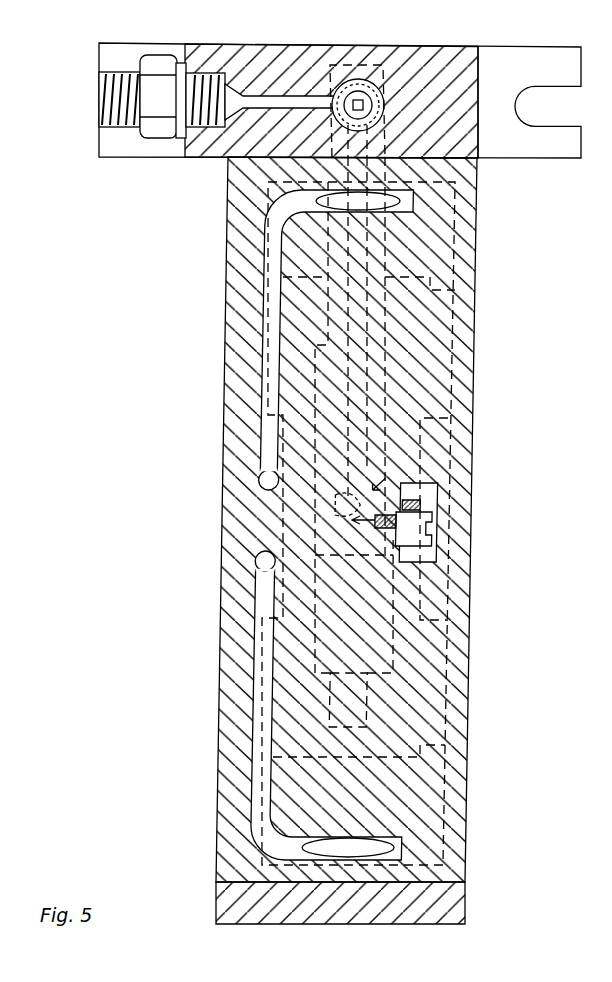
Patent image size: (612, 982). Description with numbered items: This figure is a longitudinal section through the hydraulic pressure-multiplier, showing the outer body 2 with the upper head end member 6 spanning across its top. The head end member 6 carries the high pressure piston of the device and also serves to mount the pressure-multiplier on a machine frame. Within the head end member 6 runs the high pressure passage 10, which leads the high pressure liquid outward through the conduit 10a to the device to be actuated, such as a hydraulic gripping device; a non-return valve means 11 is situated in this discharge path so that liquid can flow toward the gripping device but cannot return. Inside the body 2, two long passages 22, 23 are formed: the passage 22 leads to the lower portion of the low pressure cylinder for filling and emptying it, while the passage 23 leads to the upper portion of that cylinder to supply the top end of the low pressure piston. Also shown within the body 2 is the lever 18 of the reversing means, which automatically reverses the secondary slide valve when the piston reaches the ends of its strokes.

The outer body 2 is at (462, 540).
The upper head end member 6 is at (442, 68).
The high pressure passage 10 is at (278, 100).
The conduit 10a is at (153, 62).
The non-return valve means 11 is at (362, 88).
The lever 18 is at (433, 497).
The passage 22 is at (272, 652).
The passage 23 is at (270, 342).